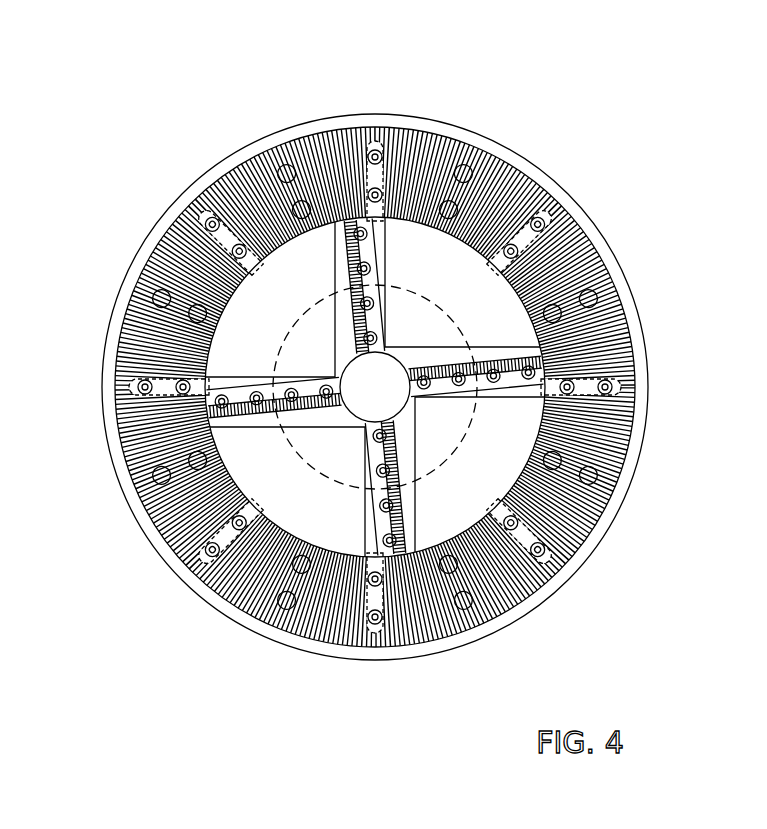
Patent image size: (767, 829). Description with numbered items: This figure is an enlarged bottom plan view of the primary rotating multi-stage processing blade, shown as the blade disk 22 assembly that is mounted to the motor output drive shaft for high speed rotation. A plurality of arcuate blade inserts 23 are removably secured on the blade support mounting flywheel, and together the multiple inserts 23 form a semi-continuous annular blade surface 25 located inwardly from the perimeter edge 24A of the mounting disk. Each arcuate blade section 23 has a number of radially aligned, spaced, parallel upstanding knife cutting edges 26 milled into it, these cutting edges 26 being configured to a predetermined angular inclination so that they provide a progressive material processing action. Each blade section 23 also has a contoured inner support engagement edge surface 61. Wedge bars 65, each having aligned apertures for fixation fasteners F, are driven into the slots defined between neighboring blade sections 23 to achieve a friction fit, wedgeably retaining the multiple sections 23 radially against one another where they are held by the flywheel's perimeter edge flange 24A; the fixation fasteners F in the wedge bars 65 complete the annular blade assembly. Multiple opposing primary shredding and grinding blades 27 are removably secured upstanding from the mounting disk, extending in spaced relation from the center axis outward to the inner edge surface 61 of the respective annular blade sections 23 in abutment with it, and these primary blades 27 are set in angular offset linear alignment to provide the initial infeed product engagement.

The blade disk 22 is at (379, 384).
The arcuate blade inserts 23 is at (272, 140).
The perimeter edge flange 24A is at (592, 215).
The annular blade surface 25 is at (497, 200).
The knife cutting edges 26 is at (417, 628).
The primary shredding and grinding blades 27 is at (373, 249).
The inner support engagement edge surface 61 is at (243, 285).
The wedge bars 65 is at (367, 170).
The fixation fasteners F is at (379, 240).